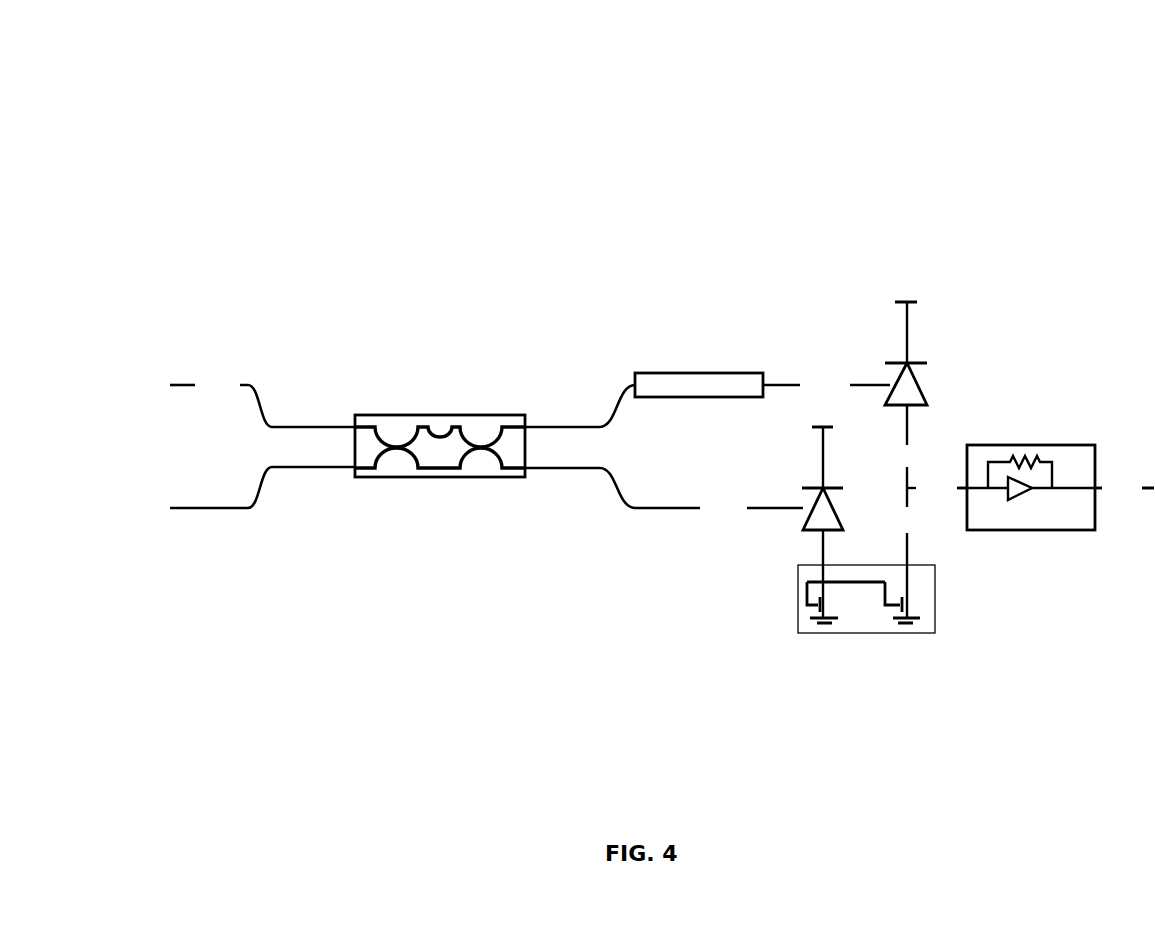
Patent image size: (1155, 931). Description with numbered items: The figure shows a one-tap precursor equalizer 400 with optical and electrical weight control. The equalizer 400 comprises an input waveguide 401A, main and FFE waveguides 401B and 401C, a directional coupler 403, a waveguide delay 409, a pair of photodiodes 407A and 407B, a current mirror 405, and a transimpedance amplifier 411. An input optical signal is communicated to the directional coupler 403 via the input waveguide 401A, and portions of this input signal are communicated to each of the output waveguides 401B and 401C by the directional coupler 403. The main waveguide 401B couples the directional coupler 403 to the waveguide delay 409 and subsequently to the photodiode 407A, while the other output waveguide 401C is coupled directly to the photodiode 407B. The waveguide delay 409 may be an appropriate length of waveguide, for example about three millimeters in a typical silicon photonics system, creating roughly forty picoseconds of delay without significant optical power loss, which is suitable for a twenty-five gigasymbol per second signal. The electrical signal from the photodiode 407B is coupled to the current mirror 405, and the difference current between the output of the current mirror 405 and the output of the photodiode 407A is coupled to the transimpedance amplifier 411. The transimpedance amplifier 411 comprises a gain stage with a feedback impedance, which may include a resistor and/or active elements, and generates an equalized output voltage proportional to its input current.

The equalizer 400 is at (214, 88).
The input waveguide 401A is at (187, 387).
The main waveguide 401B is at (777, 382).
The FFE waveguide 401C is at (650, 508).
The directional coupler 403 is at (450, 415).
The current mirror 405 is at (868, 634).
The photodiode 407A is at (955, 380).
The photodiode 407B is at (805, 530).
The waveguide delay 409 is at (668, 372).
The transimpedance amplifier 411 is at (1040, 445).